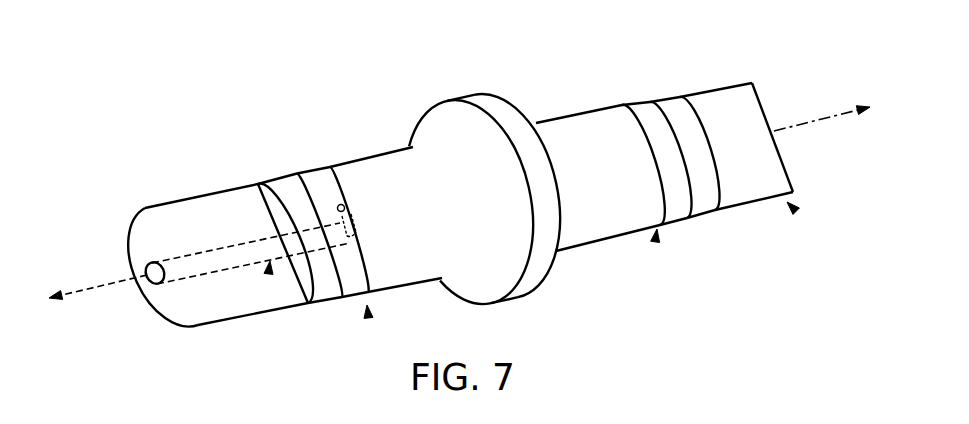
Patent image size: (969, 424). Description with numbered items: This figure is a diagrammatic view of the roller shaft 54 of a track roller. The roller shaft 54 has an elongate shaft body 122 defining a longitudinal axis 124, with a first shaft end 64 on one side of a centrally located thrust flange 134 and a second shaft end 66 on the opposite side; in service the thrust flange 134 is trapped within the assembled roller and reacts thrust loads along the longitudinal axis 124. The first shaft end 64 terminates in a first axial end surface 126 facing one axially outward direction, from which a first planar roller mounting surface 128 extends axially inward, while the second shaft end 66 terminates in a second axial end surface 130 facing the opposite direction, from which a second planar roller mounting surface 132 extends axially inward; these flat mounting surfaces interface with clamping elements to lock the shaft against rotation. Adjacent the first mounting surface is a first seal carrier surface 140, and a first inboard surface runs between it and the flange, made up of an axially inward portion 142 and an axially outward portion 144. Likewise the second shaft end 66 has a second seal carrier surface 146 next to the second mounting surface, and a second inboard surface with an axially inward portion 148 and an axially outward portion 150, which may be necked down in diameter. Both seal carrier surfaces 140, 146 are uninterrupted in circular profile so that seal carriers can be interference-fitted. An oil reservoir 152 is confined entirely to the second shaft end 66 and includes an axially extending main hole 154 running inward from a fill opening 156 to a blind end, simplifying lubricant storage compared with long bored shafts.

The roller shaft 54 is at (459, 201).
The first shaft end 64 is at (655, 240).
The second shaft end 66 is at (369, 316).
The elongate shaft body 122 is at (795, 210).
The longitudinal axis 124 is at (103, 288).
The first axial end surface 126 is at (760, 86).
The first planar roller mounting surface 128 is at (734, 211).
The second axial end surface 130 is at (182, 320).
The second planar roller mounting surface 132 is at (199, 195).
The thrust flange 134 is at (517, 290).
The first seal carrier surface 140 is at (674, 95).
The axially inward portion of first inboard surface 142 is at (578, 113).
The axially outward portion of first inboard surface 144 is at (640, 98).
The second seal carrier surface 146 is at (281, 175).
The axially inward portion of second inboard surface 148 is at (368, 155).
The axially outward portion of second inboard surface 150 is at (313, 171).
The oil reservoir 152 is at (268, 272).
The main hole 154 is at (240, 247).
The fill opening 156 is at (146, 272).